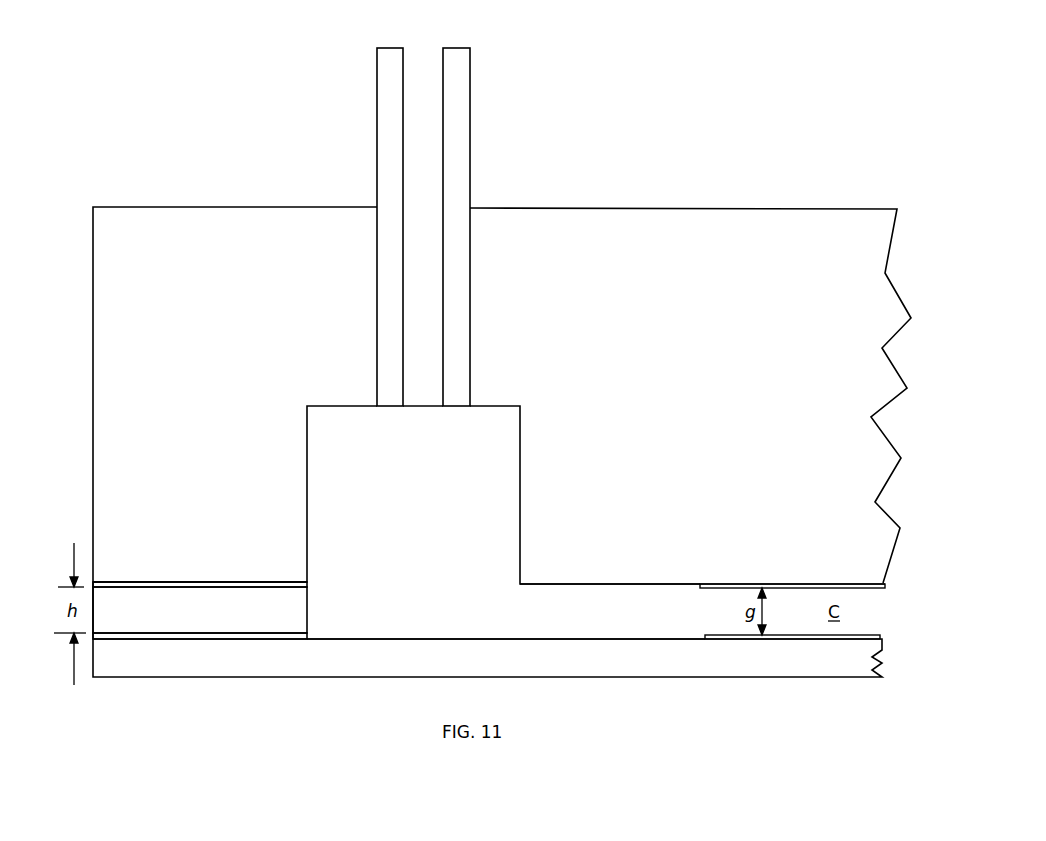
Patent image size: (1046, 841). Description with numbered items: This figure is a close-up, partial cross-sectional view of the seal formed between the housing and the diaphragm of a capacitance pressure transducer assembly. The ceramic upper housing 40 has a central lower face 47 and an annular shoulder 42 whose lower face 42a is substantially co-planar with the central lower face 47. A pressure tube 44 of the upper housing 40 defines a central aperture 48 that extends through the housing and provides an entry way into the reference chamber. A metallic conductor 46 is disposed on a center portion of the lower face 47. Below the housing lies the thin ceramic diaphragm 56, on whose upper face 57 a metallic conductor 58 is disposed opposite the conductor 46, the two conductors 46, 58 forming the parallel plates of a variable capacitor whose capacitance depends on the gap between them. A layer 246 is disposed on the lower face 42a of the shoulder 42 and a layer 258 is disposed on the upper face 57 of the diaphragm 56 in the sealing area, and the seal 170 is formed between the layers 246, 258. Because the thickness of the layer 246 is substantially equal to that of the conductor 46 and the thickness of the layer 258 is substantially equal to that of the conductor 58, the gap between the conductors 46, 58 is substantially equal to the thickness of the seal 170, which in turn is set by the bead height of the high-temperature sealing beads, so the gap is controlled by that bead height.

The upper housing 40 is at (574, 275).
The annular shoulder 42 is at (210, 470).
The lower face of the annular shoulder 42a is at (258, 582).
The pressure tube 44 is at (388, 112).
The central aperture 48 is at (421, 62).
The metallic conductor 46 is at (890, 589).
The central lower face 47 is at (627, 584).
The diaphragm 56 is at (665, 669).
The upper face of the diaphragm 57 is at (482, 638).
The metallic conductor 58 is at (861, 632).
The seal 170 is at (216, 620).
The layer 246 is at (312, 583).
The layer 258 is at (312, 638).